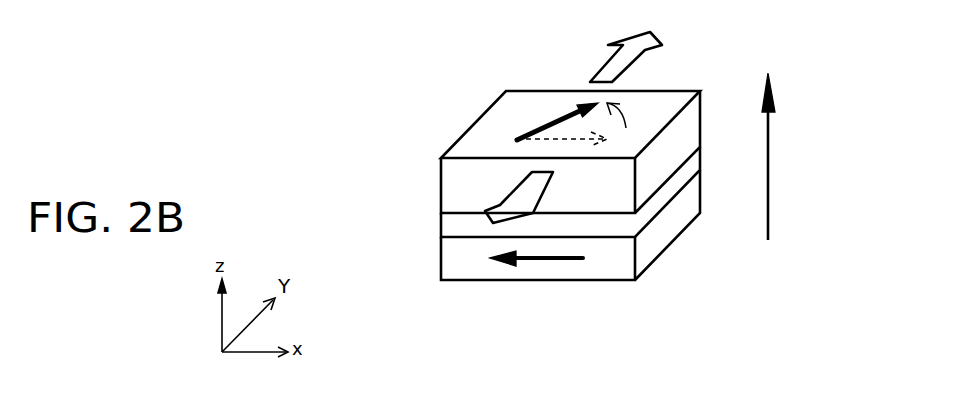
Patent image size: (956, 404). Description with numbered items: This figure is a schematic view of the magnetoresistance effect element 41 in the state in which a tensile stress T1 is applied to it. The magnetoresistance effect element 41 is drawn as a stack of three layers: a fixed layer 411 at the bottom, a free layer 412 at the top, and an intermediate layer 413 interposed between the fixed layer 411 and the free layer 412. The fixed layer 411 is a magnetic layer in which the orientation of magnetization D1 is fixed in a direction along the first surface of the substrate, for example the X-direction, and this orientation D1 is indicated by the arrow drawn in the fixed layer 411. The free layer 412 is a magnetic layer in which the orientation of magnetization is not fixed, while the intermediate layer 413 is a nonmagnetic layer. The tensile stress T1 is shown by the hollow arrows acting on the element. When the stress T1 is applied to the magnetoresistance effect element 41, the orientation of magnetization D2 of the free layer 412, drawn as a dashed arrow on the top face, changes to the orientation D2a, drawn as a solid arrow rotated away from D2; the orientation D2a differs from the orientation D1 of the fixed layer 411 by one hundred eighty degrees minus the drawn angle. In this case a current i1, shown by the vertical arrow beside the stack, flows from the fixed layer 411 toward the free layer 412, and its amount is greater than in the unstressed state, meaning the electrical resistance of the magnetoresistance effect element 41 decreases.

The magnetoresistance effect element 41 is at (358, 162).
The fixed layer 411 is at (470, 258).
The free layer 412 is at (473, 187).
The intermediate layer 413 is at (470, 228).
The orientation of magnetization of the fixed layer D1 is at (552, 262).
The orientation of magnetization of the free layer D2 is at (568, 137).
The changed orientation of magnetization of the free layer D2a is at (547, 121).
The tensile stress T1 is at (600, 62).
The current i1 is at (768, 158).